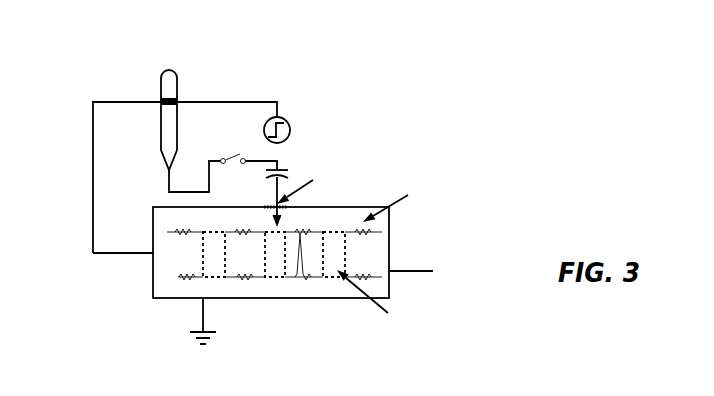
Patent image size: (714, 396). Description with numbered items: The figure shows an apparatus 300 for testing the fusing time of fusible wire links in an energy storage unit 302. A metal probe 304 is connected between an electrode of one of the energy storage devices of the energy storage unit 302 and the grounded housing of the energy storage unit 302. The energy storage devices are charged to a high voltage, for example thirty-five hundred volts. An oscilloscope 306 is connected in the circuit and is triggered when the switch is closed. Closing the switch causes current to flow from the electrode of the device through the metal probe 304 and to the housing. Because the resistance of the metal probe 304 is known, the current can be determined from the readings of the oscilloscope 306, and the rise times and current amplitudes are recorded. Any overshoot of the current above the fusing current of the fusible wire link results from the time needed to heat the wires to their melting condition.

The apparatus 300 is at (113, 56).
The energy storage unit 302 is at (390, 270).
The metal probe 304 is at (189, 80).
The oscilloscope 306 is at (289, 120).